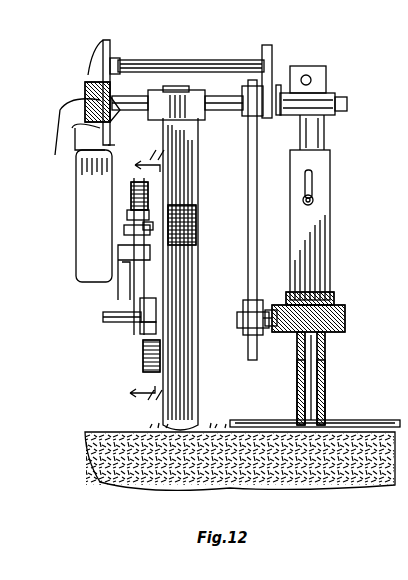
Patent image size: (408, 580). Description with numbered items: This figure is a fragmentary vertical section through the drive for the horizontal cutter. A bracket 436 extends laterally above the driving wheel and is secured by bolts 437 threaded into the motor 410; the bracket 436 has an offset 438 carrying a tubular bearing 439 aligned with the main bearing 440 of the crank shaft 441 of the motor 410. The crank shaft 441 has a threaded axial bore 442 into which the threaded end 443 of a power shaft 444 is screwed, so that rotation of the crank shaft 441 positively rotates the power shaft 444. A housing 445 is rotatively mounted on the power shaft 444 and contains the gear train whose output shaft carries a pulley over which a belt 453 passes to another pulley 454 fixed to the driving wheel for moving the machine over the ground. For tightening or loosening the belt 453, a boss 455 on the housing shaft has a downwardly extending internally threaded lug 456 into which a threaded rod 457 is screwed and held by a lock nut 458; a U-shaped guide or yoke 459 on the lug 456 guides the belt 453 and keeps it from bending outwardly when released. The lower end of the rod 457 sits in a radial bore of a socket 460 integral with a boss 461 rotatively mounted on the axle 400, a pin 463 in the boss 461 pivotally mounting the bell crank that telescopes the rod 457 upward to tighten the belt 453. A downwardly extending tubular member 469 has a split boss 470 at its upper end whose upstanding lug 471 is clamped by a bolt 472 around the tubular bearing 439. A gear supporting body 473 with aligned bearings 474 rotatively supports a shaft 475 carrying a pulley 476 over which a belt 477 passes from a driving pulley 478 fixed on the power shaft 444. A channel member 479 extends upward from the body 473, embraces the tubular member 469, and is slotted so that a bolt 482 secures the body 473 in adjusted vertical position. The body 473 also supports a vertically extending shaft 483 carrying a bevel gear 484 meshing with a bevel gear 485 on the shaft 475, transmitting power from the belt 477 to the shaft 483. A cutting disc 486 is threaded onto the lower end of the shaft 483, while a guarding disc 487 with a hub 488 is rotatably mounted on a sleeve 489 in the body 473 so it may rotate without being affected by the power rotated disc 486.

The axle 400 is at (101, 334).
The motor 410 is at (101, 83).
The bracket 436 is at (191, 46).
The bolts 437 is at (135, 47).
The offset 438 is at (270, 69).
The tubular bearing 439 is at (295, 73).
The main bearing 440 is at (80, 91).
The crank shaft 441 is at (80, 184).
The threaded axial bore 442 is at (130, 94).
The threaded end 443 is at (129, 119).
The power shaft 444 is at (176, 99).
The housing 445 is at (195, 274).
The belt 453 is at (115, 256).
The pulley 454 is at (130, 365).
The boss 455 is at (115, 209).
The internally threaded lug 456 is at (116, 227).
The threaded rod 457 is at (106, 281).
The lock nut 458 is at (116, 272).
The U-shaped guide or yoke 459 is at (182, 207).
The socket 460 is at (119, 306).
The boss 461 is at (127, 343).
The pin 463 is at (178, 244).
The tubular member 469 is at (333, 132).
The boss 470 is at (322, 86).
The upstanding lug 471 is at (325, 65).
The bolt 472 is at (320, 54).
The gear supporting body 473 is at (331, 378).
The bearings 474 is at (278, 341).
The shaft 475 is at (265, 300).
The pulley 476 is at (247, 345).
The belt 477 is at (264, 220).
The driving pulley 478 is at (224, 94).
The channel member 479 is at (327, 225).
The bolt 482 is at (334, 187).
The vertically extending shaft 483 is at (339, 377).
The bevel gear 484 is at (322, 318).
The bevel gear 485 is at (325, 288).
The cutting disc 486 is at (240, 456).
The guarding disc 487 is at (315, 411).
The hub 488 is at (342, 392).
The sleeve 489 is at (279, 392).